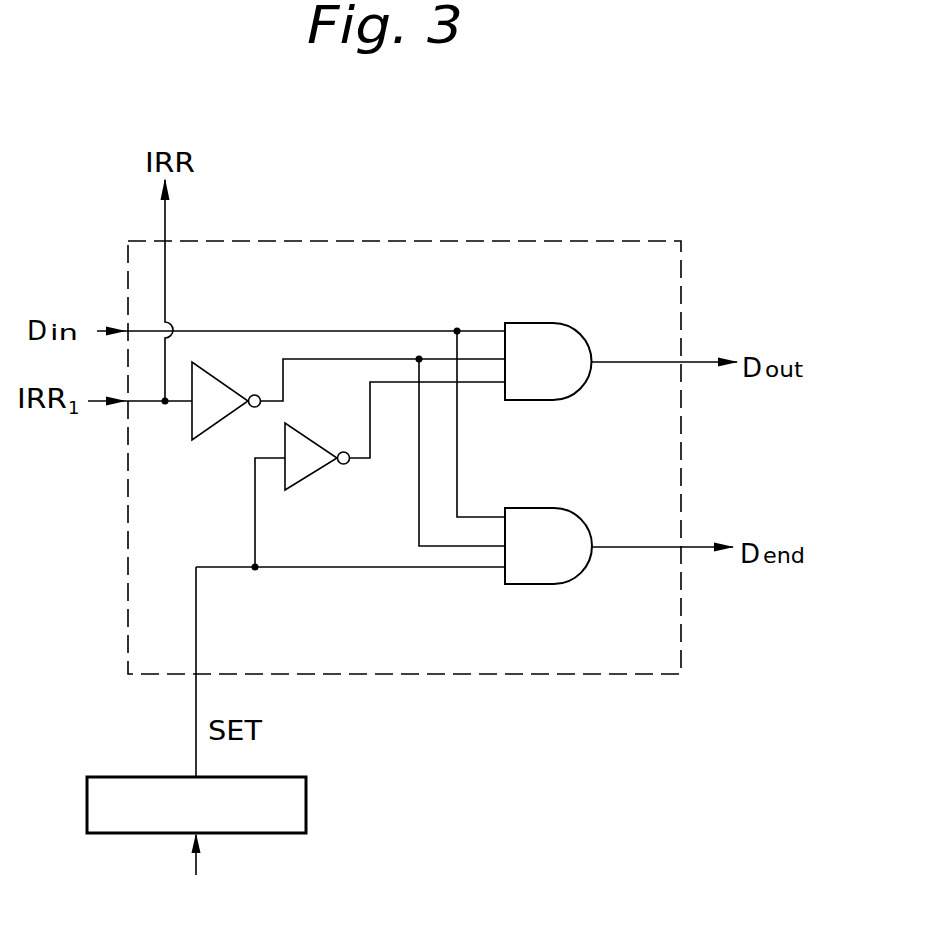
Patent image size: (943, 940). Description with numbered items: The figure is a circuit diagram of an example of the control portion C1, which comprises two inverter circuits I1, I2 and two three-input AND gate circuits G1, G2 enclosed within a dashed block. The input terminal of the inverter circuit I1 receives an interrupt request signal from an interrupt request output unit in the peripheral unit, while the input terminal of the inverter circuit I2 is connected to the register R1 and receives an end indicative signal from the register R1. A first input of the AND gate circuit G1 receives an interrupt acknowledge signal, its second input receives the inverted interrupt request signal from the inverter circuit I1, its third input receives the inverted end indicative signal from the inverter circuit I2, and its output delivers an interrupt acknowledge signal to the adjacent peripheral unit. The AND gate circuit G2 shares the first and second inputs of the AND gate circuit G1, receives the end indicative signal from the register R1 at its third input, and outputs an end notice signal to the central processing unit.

The control portion C1 is at (438, 240).
The inverter circuit I1 is at (226, 401).
The inverter circuit I2 is at (317, 456).
The AND gate circuit G1 is at (548, 361).
The AND gate circuit G2 is at (548, 546).
The register R1 is at (196, 805).